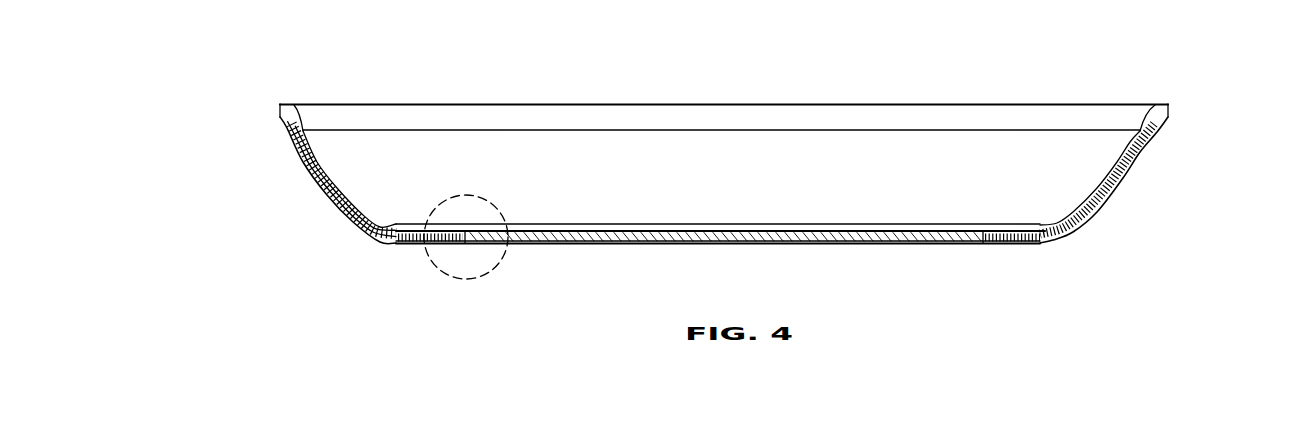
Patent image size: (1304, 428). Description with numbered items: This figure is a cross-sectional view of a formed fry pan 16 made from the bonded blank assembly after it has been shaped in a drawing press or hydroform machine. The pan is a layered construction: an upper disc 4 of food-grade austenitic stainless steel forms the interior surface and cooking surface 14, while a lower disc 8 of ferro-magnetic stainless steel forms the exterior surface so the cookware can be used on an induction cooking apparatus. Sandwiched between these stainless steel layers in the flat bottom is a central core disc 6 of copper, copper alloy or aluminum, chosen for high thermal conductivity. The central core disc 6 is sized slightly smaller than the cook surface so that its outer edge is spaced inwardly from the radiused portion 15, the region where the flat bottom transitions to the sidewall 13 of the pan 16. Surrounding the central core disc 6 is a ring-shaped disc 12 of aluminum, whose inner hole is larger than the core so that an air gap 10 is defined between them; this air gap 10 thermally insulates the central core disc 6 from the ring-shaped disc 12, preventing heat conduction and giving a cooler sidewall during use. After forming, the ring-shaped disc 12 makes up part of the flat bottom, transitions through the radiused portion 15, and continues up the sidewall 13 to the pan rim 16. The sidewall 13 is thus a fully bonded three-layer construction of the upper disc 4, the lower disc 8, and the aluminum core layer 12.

The upper disc 4 is at (868, 230).
The central core disc 6 is at (957, 244).
The lower disc 8 is at (1090, 227).
The air gap 10 is at (467, 280).
The ring-shaped disc 12 is at (388, 244).
The sidewall 13 is at (296, 143).
The cooking surface 14 is at (743, 226).
The radiused portion 15 is at (386, 225).
The fry pan 16 is at (960, 85).